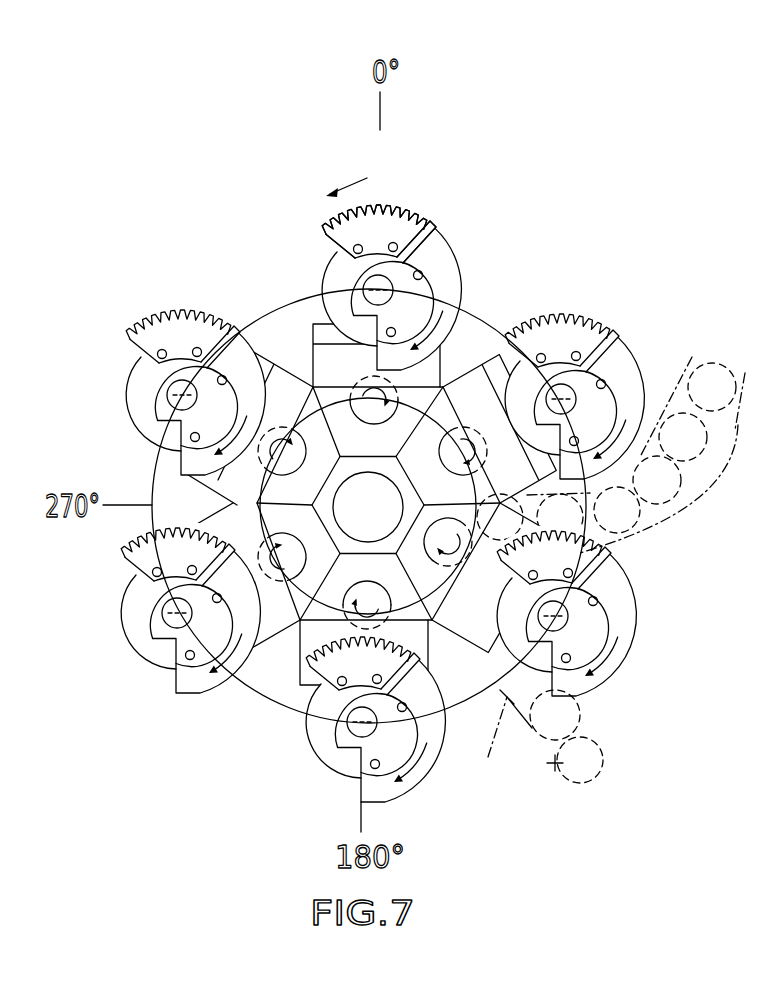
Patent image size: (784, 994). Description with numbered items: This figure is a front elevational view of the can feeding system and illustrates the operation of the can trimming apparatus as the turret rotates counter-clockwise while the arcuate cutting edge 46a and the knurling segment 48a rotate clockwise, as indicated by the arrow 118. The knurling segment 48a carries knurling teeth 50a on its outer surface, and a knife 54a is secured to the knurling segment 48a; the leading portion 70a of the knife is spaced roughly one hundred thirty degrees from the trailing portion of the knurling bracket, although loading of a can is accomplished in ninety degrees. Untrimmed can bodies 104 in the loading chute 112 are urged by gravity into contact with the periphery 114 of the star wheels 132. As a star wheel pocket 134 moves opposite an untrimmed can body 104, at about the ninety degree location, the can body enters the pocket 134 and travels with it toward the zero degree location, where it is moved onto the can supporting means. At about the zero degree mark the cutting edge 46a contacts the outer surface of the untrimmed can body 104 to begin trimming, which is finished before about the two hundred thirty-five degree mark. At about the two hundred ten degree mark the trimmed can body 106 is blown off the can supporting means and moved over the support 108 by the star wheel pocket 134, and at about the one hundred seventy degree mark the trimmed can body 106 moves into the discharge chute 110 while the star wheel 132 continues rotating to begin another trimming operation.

The arcuate cutting edge 46a is at (452, 282).
The knurling segment 48a is at (330, 230).
The knurling teeth 50a is at (402, 207).
The knife 54a is at (440, 229).
The leading portion of the knife 70a is at (377, 355).
The arrow 118 is at (470, 330).
The support 108 is at (190, 633).
The star wheel 132 is at (375, 452).
The periphery of the star wheels 114 is at (463, 493).
The star wheel pocket 134 is at (460, 527).
The untrimmed can body 104 is at (690, 447).
The loading chute 112 is at (670, 522).
The trimmed can body 106 is at (567, 763).
The discharge chute 110 is at (580, 710).